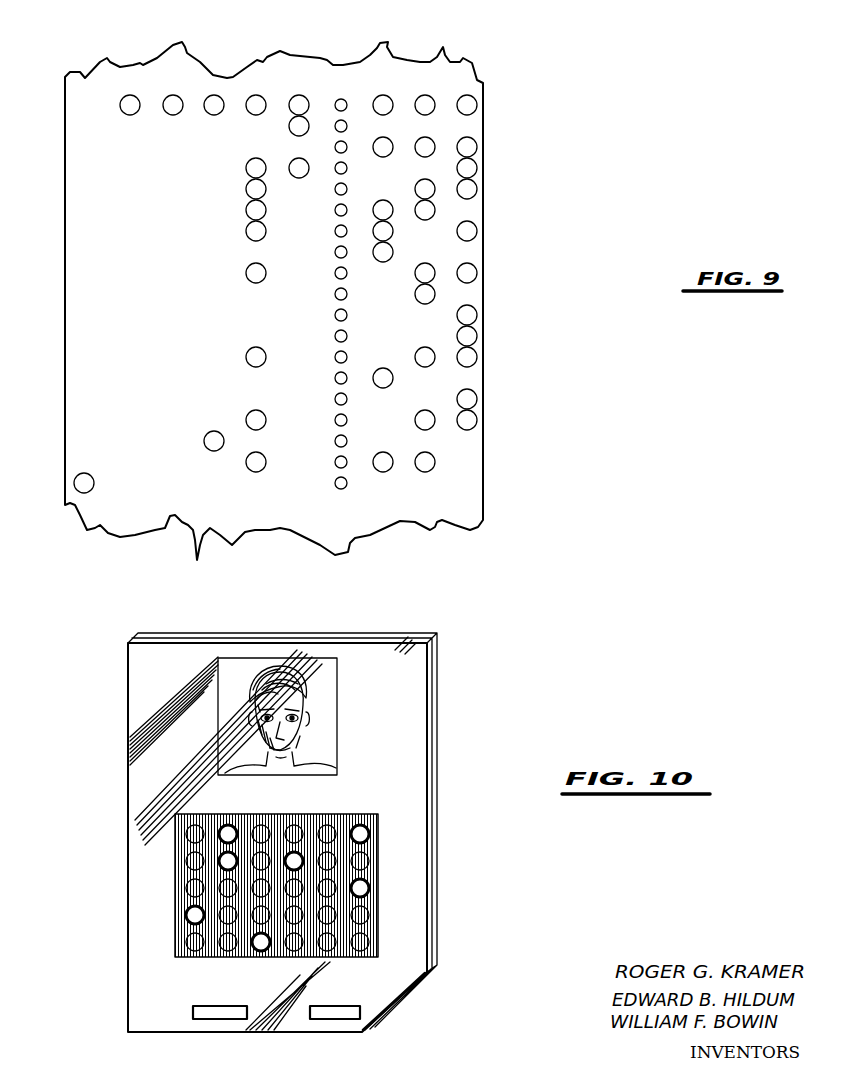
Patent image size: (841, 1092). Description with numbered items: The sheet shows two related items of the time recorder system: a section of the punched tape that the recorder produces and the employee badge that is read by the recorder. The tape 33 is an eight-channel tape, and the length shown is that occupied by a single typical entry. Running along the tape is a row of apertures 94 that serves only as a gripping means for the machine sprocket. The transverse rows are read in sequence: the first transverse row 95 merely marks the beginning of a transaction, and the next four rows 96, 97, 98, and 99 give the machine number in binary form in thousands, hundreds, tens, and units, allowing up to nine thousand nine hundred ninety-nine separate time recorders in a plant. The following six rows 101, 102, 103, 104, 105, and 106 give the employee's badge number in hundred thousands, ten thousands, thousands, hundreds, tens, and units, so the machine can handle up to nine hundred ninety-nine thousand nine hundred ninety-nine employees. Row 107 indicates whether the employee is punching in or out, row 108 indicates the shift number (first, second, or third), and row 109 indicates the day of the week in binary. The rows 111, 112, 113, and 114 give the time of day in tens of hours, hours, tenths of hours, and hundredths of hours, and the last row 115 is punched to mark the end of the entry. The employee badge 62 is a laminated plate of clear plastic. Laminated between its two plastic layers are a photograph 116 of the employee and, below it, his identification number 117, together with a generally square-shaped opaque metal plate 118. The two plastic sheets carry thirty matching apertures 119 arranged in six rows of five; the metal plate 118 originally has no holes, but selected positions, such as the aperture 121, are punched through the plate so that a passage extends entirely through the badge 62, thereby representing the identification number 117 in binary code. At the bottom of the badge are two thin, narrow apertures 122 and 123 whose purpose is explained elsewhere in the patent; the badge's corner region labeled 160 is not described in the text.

In FIG. 9, the tape 33 is at (460, 512).
In FIG. 9, the row of apertures 94 is at (345, 126).
In FIG. 9, the first transverse row 95 is at (65, 105).
In FIG. 9, the row 96 is at (65, 126).
In FIG. 9, the row 97 is at (65, 147).
In FIG. 9, the row 98 is at (65, 168).
In FIG. 9, the row 99 is at (65, 189).
In FIG. 9, the row 101 is at (65, 210).
In FIG. 9, the row 102 is at (65, 231).
In FIG. 9, the row 103 is at (65, 252).
In FIG. 9, the row 104 is at (65, 273).
In FIG. 9, the row 105 is at (65, 294).
In FIG. 9, the row 106 is at (65, 315).
In FIG. 9, the row 107 is at (65, 336).
In FIG. 9, the row 108 is at (65, 357).
In FIG. 9, the row 109 is at (65, 378).
In FIG. 9, the row 111 is at (65, 399).
In FIG. 9, the row 112 is at (65, 420).
In FIG. 9, the row 113 is at (65, 441).
In FIG. 9, the row 114 is at (65, 462).
In FIG. 9, the last row 115 is at (65, 483).
In FIG. 10, the employee badge 62 is at (393, 660).
In FIG. 10, the photograph 116 is at (303, 670).
In FIG. 10, the identification number 117 is at (332, 792).
In FIG. 10, the opaque metal plate 118 is at (370, 845).
In FIG. 10, the matching apertures 119 is at (192, 938).
In FIG. 10, the aperture 121 is at (192, 834).
In FIG. 10, the thin, narrow aperture 122 is at (218, 1013).
In FIG. 10, the thin, narrow aperture 123 is at (334, 1013).
In FIG. 10, the chamfered corner 160 is at (398, 1000).